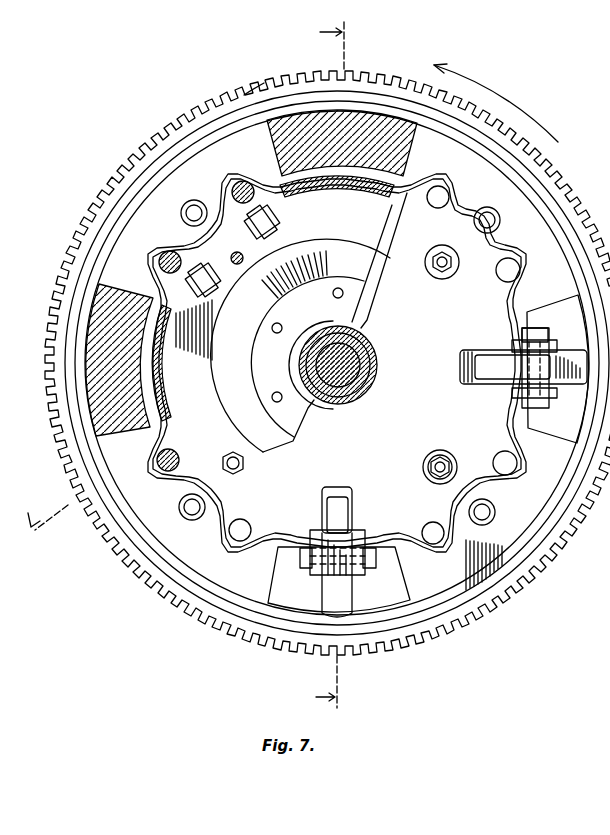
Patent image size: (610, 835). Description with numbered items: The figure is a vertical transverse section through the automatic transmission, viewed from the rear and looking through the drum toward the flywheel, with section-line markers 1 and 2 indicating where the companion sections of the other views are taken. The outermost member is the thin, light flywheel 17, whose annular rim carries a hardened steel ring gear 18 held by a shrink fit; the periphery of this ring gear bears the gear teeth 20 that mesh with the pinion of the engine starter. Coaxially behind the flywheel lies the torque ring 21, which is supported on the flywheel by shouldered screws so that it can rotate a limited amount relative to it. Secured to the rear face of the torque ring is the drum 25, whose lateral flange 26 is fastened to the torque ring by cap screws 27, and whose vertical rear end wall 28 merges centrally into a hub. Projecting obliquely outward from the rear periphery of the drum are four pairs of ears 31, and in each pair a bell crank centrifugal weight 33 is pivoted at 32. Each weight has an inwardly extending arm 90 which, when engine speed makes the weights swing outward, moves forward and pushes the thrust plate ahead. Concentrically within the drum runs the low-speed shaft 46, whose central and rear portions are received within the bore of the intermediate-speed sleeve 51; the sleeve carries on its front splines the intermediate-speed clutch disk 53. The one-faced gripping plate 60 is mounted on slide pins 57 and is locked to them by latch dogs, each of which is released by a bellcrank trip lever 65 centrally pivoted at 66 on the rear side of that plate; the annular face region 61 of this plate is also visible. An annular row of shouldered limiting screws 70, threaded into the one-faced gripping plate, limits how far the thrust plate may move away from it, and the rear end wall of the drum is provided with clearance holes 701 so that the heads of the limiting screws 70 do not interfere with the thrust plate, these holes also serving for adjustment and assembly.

The flywheel 17 is at (286, 90).
The ring gear 18 is at (185, 128).
The gear teeth 20 is at (262, 96).
The torque ring 21 is at (249, 110).
The drum 25 is at (140, 277).
The lateral flange 26 is at (155, 226).
The cap screws 27 is at (182, 204).
The rear end wall 28 is at (336, 361).
The ears 31 is at (276, 585).
The pivot 32 is at (365, 568).
The centrifugal weight 33 is at (418, 135).
The low-speed shaft 46 is at (312, 371).
The intermediate-speed sleeve 51 is at (333, 328).
The intermediate-speed clutch disk 53 is at (374, 270).
The slide pins 57 is at (183, 261).
The one-faced gripping plate 60 is at (272, 323).
The disc inner flange 61 is at (295, 357).
The trip lever 65 is at (271, 233).
The pivot 66 is at (286, 225).
The limiting screws 70 is at (243, 260).
The holes 701 is at (433, 457).
The inwardly extending arms 90 is at (345, 512).
The section line 1- 1 is at (337, 366).
The section line 2- 2 is at (43, 529).